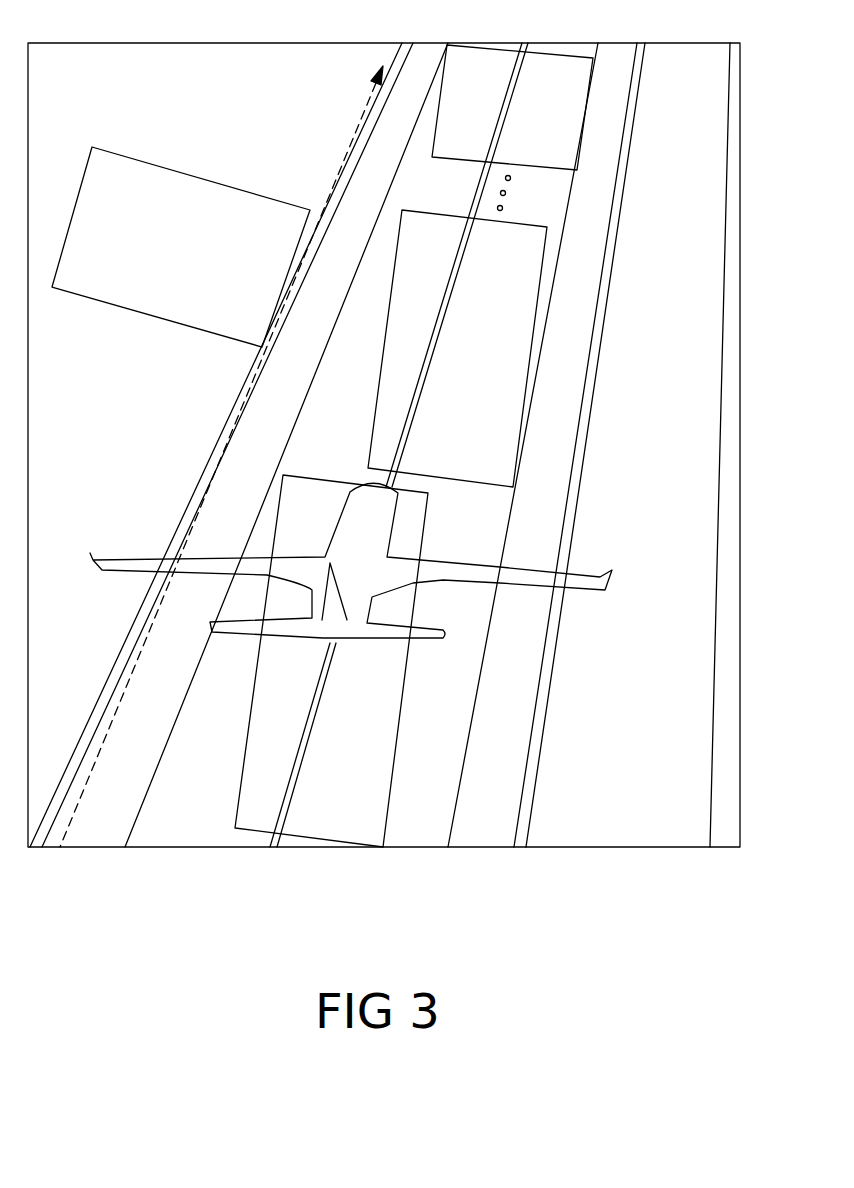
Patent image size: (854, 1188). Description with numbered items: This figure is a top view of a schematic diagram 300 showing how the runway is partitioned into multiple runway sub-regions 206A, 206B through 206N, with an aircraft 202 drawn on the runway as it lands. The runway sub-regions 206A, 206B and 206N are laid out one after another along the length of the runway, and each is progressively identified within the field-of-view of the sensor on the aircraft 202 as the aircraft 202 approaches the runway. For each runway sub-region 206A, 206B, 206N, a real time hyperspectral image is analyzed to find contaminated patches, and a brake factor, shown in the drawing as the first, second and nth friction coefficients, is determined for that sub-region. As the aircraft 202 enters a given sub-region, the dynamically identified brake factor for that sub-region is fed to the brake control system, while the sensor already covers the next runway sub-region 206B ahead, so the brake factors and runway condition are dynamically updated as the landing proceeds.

The aircraft 202 is at (354, 411).
The runway sub-region 206A is at (331, 661).
The runway sub-region 206B is at (457, 348).
The runway sub-region 206N is at (512, 107).
The dynamic friction identification environment 300 is at (465, 925).